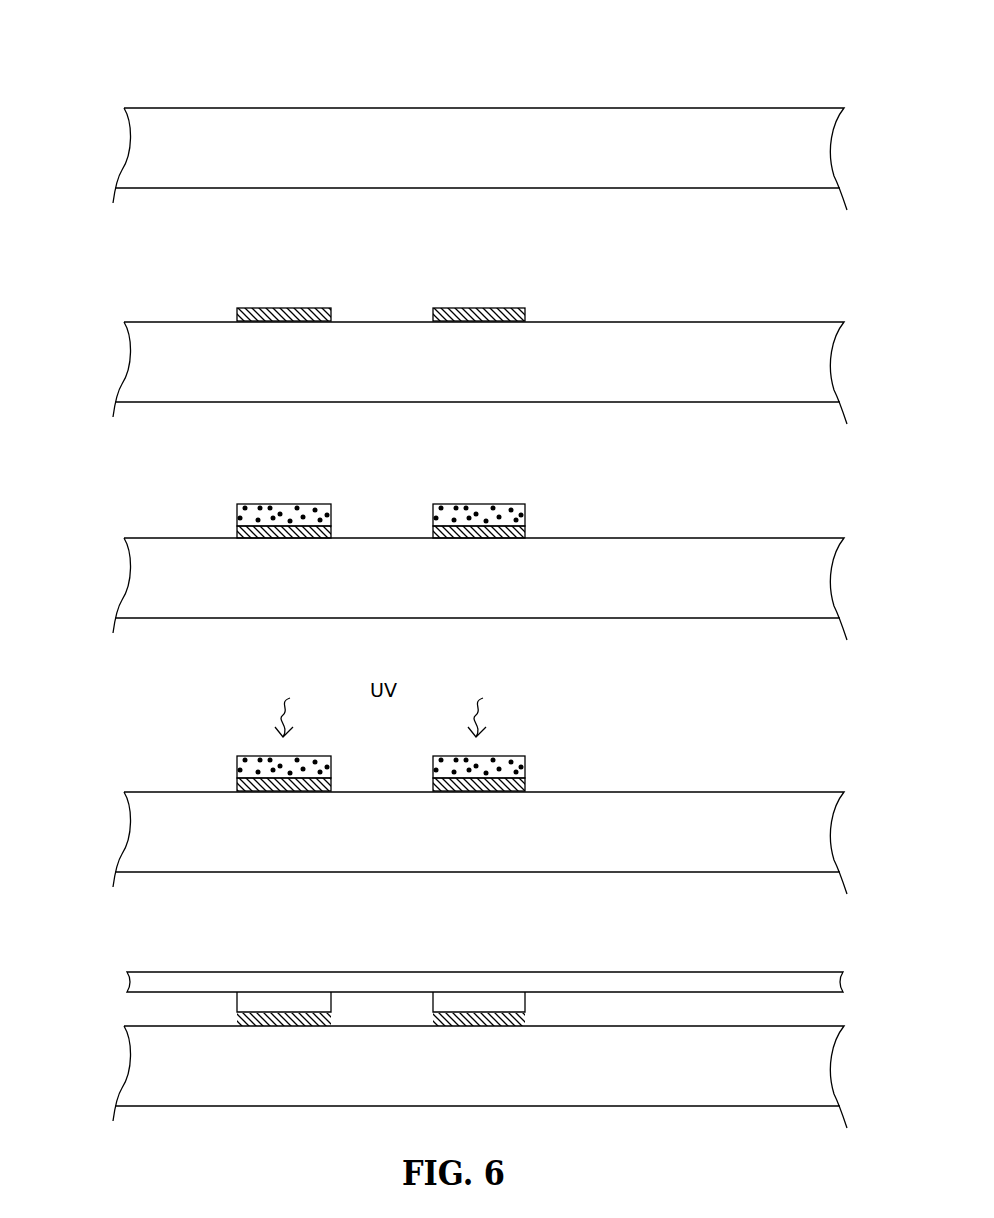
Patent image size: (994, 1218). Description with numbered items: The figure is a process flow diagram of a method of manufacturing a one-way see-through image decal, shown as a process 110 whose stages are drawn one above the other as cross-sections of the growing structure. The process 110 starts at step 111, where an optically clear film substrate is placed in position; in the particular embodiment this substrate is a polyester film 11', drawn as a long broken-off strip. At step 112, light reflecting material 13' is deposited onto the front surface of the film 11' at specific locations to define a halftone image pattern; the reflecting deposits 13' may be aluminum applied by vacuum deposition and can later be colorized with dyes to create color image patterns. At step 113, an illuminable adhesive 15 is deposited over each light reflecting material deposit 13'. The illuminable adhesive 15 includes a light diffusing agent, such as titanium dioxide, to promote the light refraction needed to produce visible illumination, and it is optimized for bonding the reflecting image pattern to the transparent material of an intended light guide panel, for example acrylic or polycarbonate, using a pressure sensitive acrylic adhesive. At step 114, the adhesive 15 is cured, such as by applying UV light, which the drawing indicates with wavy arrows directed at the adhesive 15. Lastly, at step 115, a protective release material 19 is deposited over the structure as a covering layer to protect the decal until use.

The process 110 is at (38, 31).
The step 111 is at (111, 156).
The step 112 is at (111, 369).
The step 113 is at (111, 587).
The step 114 is at (111, 837).
The step 115 is at (111, 1073).
The polyester film 11' is at (480, 618).
The light reflecting material 13' is at (425, 642).
The illuminable adhesive 15 is at (433, 515).
The protective release material 19 is at (797, 982).